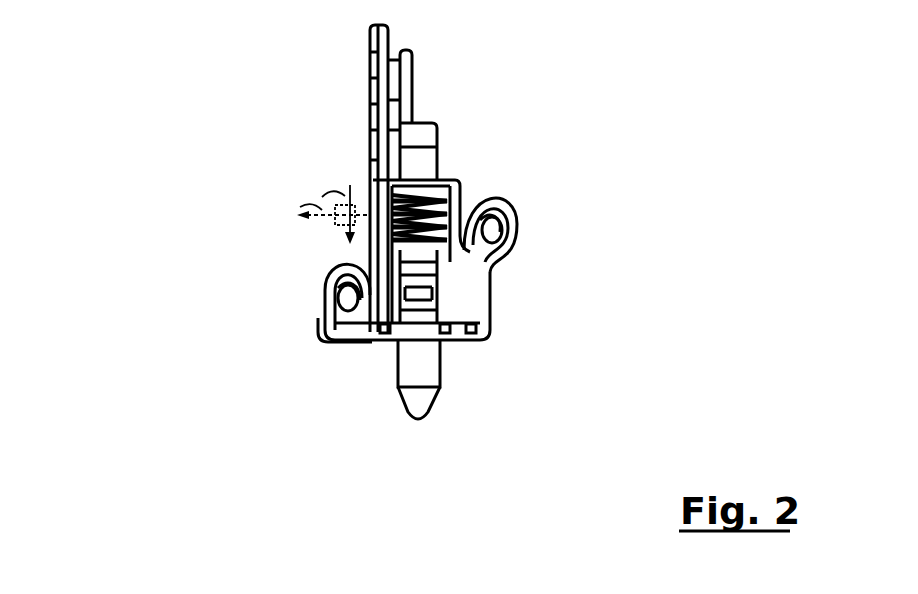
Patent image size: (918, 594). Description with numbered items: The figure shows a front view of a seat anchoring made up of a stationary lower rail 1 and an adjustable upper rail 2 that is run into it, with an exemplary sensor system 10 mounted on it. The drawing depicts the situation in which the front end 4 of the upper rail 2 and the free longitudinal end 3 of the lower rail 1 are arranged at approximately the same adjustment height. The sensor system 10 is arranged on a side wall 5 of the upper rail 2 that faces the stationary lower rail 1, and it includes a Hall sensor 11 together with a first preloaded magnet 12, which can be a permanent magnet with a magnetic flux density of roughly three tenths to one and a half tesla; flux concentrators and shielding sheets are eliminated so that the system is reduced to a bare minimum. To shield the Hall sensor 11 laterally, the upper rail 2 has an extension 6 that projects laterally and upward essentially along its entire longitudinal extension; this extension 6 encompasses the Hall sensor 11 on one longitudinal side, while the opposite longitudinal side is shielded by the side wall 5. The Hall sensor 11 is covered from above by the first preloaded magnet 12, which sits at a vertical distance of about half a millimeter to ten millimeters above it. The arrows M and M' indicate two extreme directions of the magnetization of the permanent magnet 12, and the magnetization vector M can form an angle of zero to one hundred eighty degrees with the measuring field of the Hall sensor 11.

The lower rail 1 is at (452, 345).
The upper rail 2 is at (370, 78).
The free longitudinal end 3 is at (340, 292).
The front end 4 is at (512, 243).
The side wall 5 is at (365, 140).
The extension 6 is at (330, 318).
The sensor system 10 is at (326, 238).
The Hall sensor 11 is at (362, 318).
The first preloaded magnet 12 is at (390, 167).
The magnetization direction M is at (336, 193).
The opposite magnetization direction M' is at (312, 211).